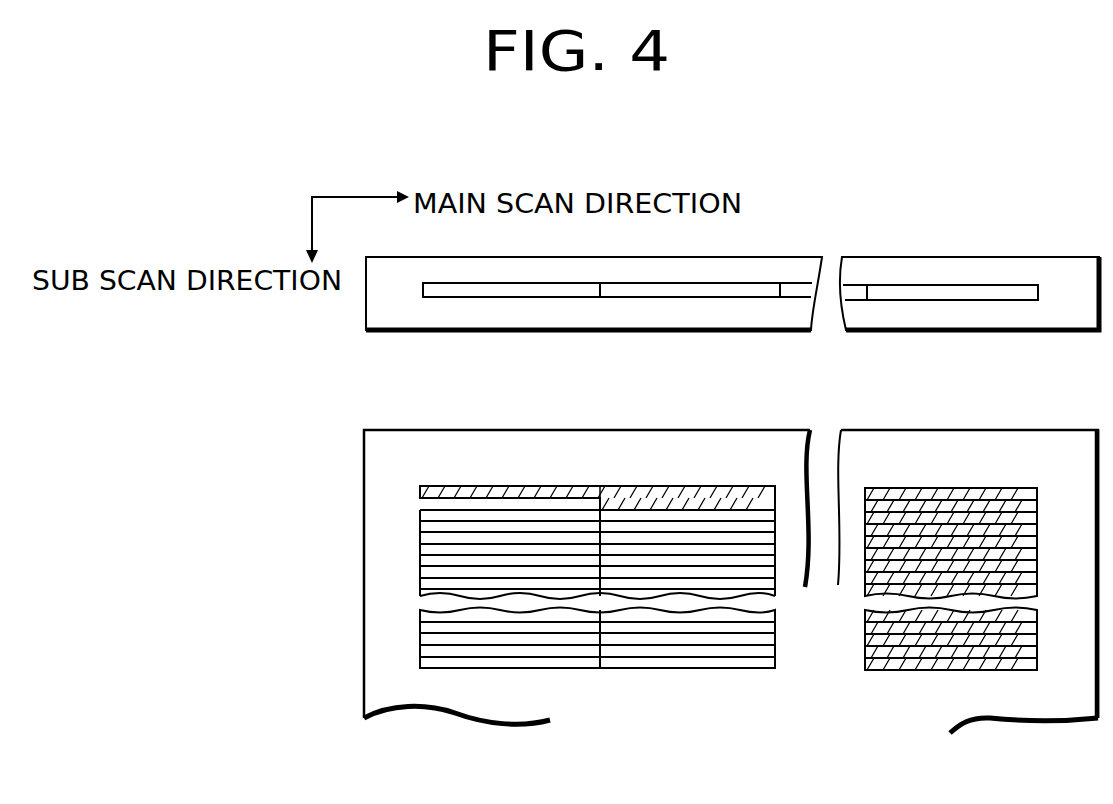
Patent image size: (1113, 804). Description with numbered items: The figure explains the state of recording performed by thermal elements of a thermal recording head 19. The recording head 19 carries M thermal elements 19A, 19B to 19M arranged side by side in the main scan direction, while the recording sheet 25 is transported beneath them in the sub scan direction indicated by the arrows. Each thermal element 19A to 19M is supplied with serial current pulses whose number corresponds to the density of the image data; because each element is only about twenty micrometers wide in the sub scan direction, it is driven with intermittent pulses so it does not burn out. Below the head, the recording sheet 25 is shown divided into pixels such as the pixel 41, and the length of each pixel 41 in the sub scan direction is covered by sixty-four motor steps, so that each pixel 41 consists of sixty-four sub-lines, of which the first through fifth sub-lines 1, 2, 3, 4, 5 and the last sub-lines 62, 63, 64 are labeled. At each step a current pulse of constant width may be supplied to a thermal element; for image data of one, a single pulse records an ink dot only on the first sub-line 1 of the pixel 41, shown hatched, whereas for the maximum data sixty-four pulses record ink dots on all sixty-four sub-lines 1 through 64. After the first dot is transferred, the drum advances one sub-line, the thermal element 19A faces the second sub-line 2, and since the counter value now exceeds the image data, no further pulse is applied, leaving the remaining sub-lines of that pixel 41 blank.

The recording head 19 is at (732, 278).
The thermal element 19A is at (490, 297).
The thermal element 19B is at (705, 297).
The thermal element 19M is at (968, 300).
The first sub-line 1 is at (420, 495).
The second sub-line 2 is at (420, 507).
The third sub-line 3 is at (420, 517).
The fourth sub-line 4 is at (420, 527).
The fifth sub-line 5 is at (420, 537).
The sixty-second sub-line 62 is at (420, 637).
The sixty-third sub-line 63 is at (420, 650).
The sixty-fourth sub-line 64 is at (420, 660).
The pixel 41 is at (536, 673).
The recording sheet 25 is at (470, 693).